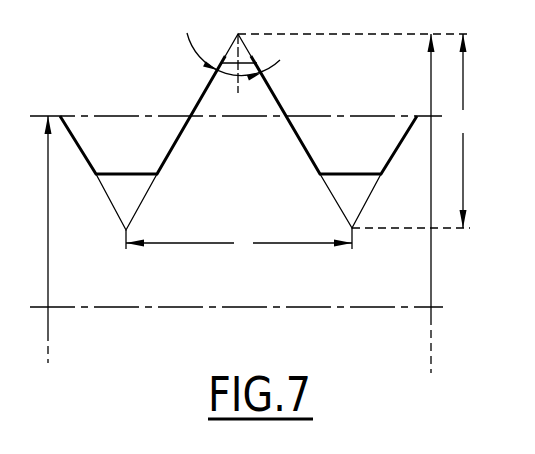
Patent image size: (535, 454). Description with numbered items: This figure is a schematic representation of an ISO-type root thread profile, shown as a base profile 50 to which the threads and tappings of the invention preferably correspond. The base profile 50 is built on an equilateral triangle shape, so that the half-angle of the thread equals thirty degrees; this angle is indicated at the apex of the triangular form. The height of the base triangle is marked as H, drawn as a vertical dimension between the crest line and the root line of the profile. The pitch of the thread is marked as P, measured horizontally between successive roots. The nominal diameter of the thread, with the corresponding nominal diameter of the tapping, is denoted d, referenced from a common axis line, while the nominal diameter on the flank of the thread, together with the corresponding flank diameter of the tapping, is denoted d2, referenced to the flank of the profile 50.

The base profile 50 is at (342, 73).
The height of the base triangle H is at (462, 131).
The nominal diameter of the thread d is at (453, 203).
The nominal diameter on the flank of the thread d2 is at (73, 239).
The pitch of the thread P is at (239, 241).